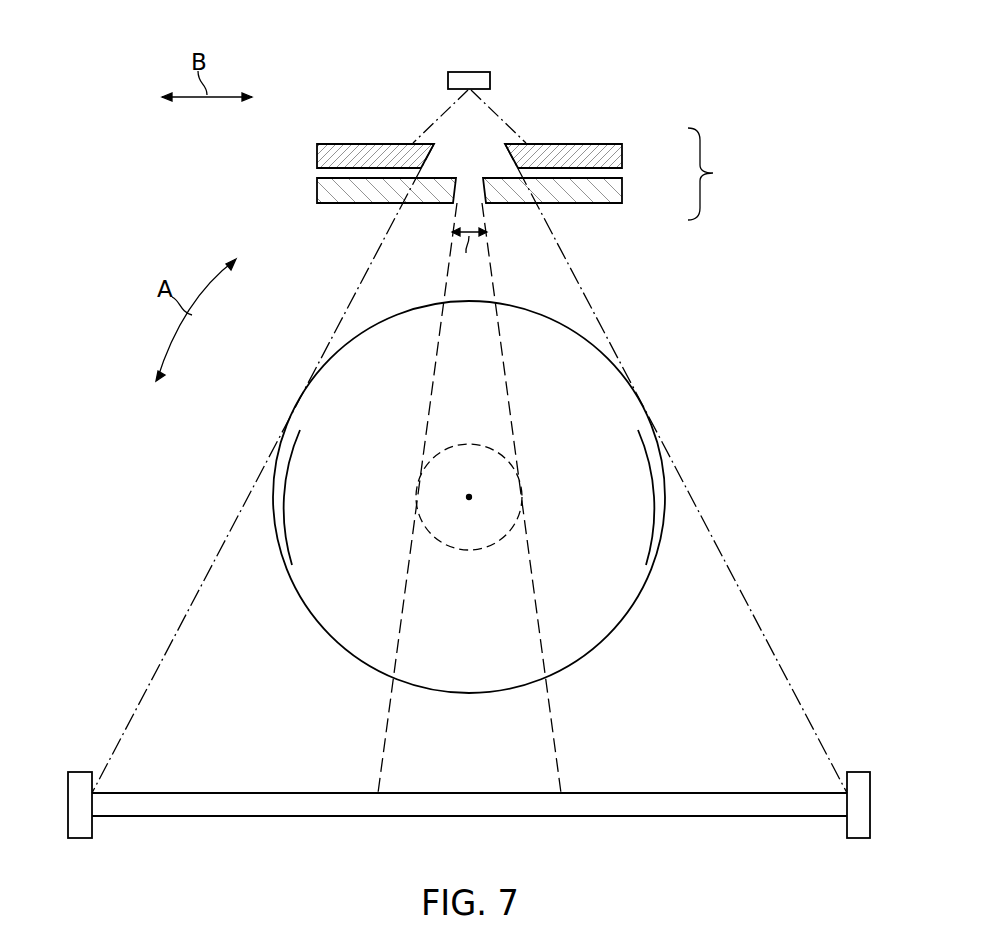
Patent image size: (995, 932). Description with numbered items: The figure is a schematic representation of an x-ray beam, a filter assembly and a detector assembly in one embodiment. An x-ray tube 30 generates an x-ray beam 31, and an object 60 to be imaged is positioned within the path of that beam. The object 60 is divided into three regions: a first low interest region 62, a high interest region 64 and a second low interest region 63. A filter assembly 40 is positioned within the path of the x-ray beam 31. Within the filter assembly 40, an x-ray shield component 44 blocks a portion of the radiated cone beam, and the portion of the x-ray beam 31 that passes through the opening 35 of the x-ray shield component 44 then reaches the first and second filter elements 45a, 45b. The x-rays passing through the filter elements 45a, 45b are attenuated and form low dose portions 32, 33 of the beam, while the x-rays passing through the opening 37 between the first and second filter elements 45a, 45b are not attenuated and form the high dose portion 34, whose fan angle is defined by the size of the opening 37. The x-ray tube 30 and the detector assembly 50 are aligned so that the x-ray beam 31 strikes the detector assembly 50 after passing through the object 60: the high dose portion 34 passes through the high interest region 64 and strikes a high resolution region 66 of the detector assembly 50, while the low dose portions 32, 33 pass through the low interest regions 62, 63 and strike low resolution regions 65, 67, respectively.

The x-ray tube 30 is at (473, 66).
The x-ray beam 31 is at (469, 468).
The low dose portion 32 is at (385, 246).
The low dose portion 33 is at (555, 246).
The high dose portion 34 is at (441, 430).
The opening 35 is at (489, 148).
The opening 37 is at (484, 212).
The filter assembly 40 is at (720, 174).
The x-ray shield component 44 is at (317, 157).
The first filter element 45a is at (317, 190).
The second filter element 45b is at (622, 188).
The detector assembly 50 is at (469, 824).
The object 60 is at (253, 496).
The first low interest region 62 is at (292, 565).
The second low interest region 63 is at (648, 567).
The high interest region 64 is at (426, 495).
The low resolution region 65 is at (278, 793).
The high resolution region 66 is at (467, 793).
The low resolution region 67 is at (660, 793).